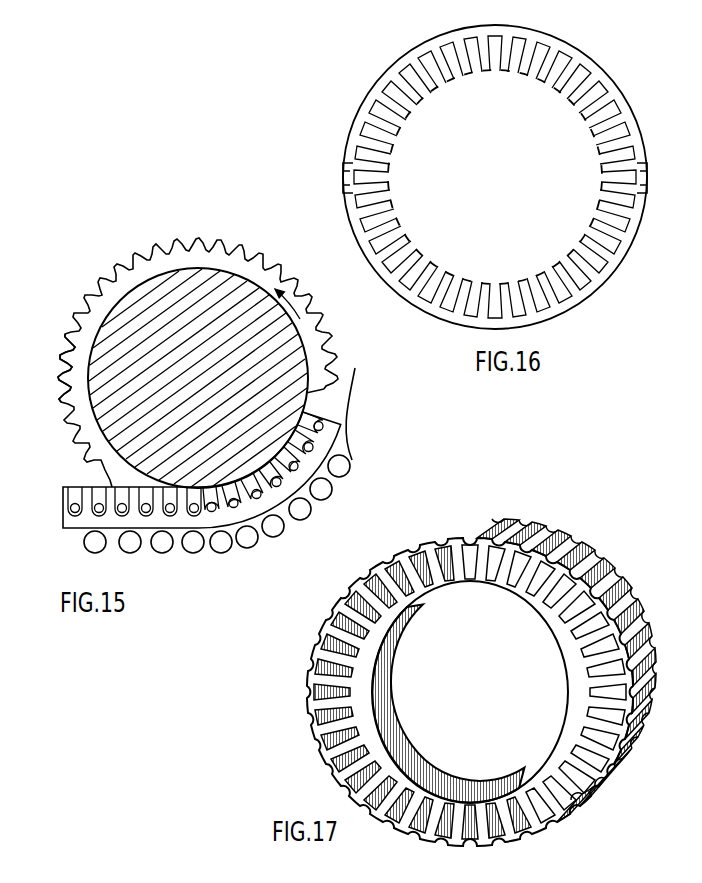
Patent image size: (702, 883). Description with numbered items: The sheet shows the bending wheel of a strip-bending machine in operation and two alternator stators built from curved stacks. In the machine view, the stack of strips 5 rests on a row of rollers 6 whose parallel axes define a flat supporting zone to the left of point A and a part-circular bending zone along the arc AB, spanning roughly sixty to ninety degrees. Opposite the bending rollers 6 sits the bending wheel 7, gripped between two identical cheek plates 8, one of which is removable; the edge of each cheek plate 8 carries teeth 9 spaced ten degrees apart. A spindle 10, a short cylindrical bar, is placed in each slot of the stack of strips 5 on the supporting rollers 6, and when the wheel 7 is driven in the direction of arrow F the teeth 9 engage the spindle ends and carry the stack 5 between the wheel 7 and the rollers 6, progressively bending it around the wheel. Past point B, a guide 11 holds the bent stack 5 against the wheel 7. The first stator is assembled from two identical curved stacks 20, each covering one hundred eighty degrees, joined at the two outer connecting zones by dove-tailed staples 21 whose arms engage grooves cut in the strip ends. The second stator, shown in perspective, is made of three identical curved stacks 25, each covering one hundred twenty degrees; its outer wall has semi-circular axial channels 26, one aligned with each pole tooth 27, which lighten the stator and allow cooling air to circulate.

In FIG. 15, the stack of strips 5 is at (254, 507).
In FIG. 15, the rollers 6 is at (128, 549).
In FIG. 15, the bending wheel 7 is at (122, 326).
In FIG. 15, the cheek plates 8 is at (86, 353).
In FIG. 15, the teeth 9 is at (70, 383).
In FIG. 15, the spindle 10 is at (168, 510).
In FIG. 15, the guide 11 is at (347, 443).
In FIG. 15, the point A is at (188, 546).
In FIG. 15, the point B is at (346, 473).
In FIG. 15, the arrow F is at (281, 297).
In FIG. 16, the curved stacks 20 is at (437, 52).
In FIG. 16, the staples 21 is at (344, 163).
In FIG. 17, the curved stacks 25 is at (441, 546).
In FIG. 17, the channels 26 is at (553, 538).
In FIG. 17, the pole teeth 27 is at (527, 592).